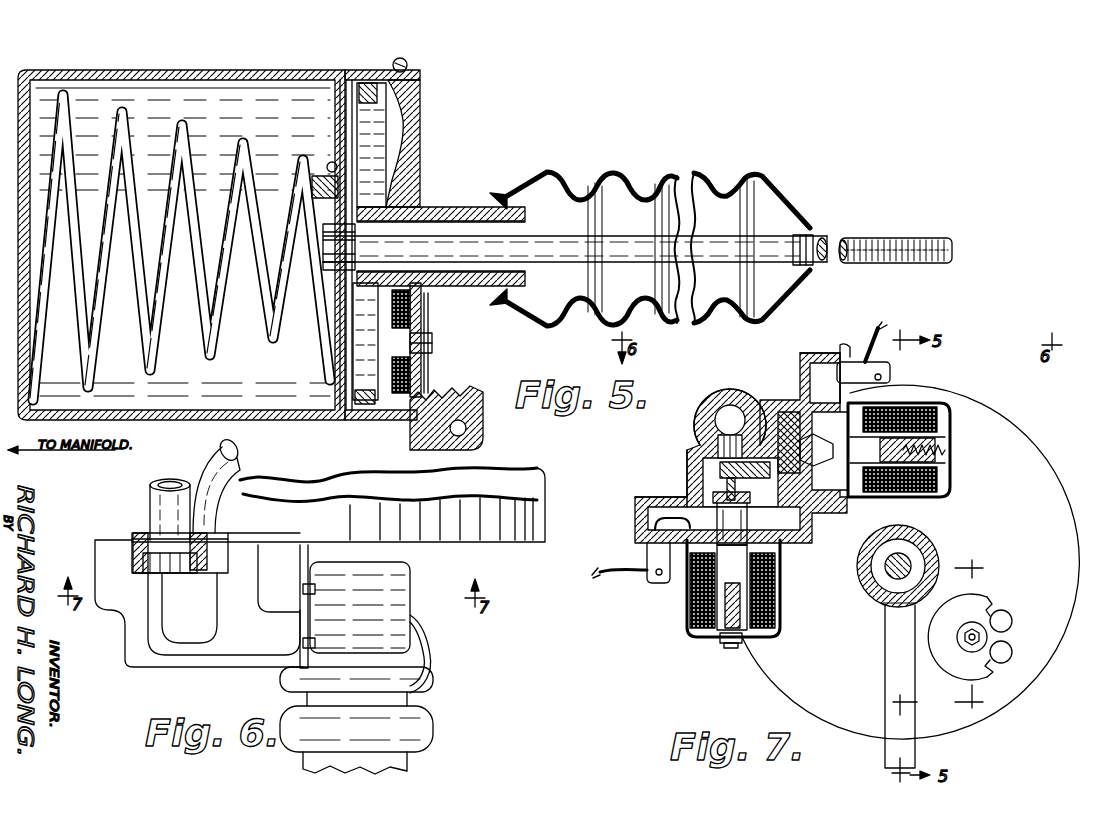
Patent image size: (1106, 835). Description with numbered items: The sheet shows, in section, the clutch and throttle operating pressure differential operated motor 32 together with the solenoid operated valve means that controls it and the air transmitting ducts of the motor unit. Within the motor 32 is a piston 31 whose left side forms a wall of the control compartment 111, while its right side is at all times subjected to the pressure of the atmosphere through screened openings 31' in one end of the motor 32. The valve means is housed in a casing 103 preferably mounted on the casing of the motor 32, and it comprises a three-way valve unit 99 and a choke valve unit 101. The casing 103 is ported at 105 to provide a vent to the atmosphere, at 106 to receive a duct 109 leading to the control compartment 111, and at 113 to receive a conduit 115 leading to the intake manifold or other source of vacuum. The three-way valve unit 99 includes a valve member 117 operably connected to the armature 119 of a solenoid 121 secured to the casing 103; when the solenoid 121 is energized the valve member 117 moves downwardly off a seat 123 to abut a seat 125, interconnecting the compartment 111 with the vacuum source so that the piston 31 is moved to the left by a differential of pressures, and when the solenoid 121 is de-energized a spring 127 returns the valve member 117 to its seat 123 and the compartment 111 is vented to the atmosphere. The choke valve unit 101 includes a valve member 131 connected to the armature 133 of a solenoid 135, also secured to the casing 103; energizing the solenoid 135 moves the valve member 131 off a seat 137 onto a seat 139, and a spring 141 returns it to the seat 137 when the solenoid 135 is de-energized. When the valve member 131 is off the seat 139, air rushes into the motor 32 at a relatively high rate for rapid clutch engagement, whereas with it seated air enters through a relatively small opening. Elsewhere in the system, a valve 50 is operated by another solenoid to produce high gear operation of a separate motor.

In FIG. 5, the motor 32 is at (258, 63).
In FIG. 6, the motor 32 is at (492, 548).
In FIG. 7, the motor 32 is at (1010, 428).
In FIG. 5, the control compartment 111 is at (123, 93).
In FIG. 5, the valve 50 is at (218, 342).
In FIG. 5, the piston 31 is at (418, 172).
In FIG. 5, the screened openings 31' is at (423, 366).
In FIG. 7, the screened openings 31' is at (993, 637).
In FIG. 6, the duct 109 is at (160, 513).
In FIG. 6, the conduit 115 is at (240, 452).
In FIG. 6, the port 106 is at (140, 548).
In FIG. 6, the casing 103 is at (243, 665).
In FIG. 7, the casing 103 is at (815, 370).
In FIG. 6, the solenoid 135 is at (407, 606).
In FIG. 7, the solenoid 135 is at (932, 500).
In FIG. 7, the port 113 is at (731, 417).
In FIG. 7, the valve member 131 is at (790, 412).
In FIG. 7, the seat 137 is at (768, 460).
In FIG. 7, the seat 123 is at (722, 432).
In FIG. 7, the valve member 117 is at (700, 455).
In FIG. 7, the three-way valve unit 99 is at (690, 445).
In FIG. 7, the seat 125 is at (712, 496).
In FIG. 7, the port 105 is at (828, 500).
In FIG. 7, the armature 133 is at (897, 410).
In FIG. 7, the seat 139 is at (875, 448).
In FIG. 7, the spring 141 is at (943, 458).
In FIG. 7, the choke valve unit 101 is at (990, 425).
In FIG. 7, the solenoid 121 is at (685, 628).
In FIG. 7, the spring 127 is at (722, 642).
In FIG. 7, the armature 119 is at (688, 580).